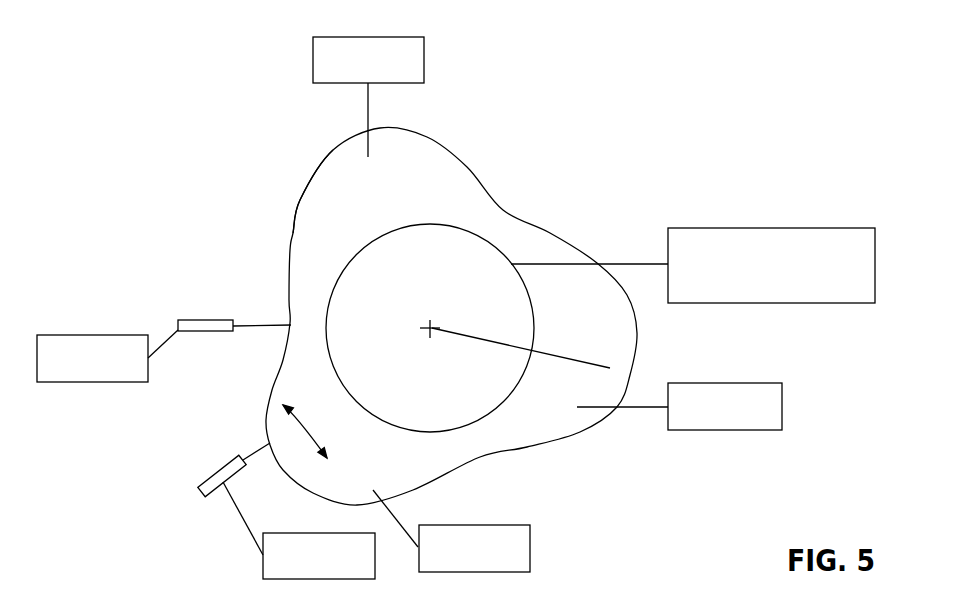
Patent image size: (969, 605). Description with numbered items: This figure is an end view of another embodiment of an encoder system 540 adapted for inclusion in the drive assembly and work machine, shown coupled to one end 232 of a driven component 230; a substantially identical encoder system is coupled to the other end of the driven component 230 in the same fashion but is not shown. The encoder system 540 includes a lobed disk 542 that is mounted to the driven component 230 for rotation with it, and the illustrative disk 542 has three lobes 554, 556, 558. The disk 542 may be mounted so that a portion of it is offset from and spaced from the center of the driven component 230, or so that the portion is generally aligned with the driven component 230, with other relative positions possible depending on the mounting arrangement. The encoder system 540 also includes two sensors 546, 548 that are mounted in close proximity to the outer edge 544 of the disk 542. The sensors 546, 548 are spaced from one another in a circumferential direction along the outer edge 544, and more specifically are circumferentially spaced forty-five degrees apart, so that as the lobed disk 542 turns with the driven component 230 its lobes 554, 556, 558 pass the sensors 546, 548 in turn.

The encoder system 540 is at (641, 87).
The lobed disk 542 is at (527, 446).
The outer edge of the disk 544 is at (297, 203).
The sensor 546 is at (110, 335).
The sensor 548 is at (335, 533).
The lobe 554 is at (383, 36).
The lobe 556 is at (742, 383).
The lobe 558 is at (458, 525).
The driven component 230 is at (742, 227).
The end of the driven component 232 is at (403, 227).